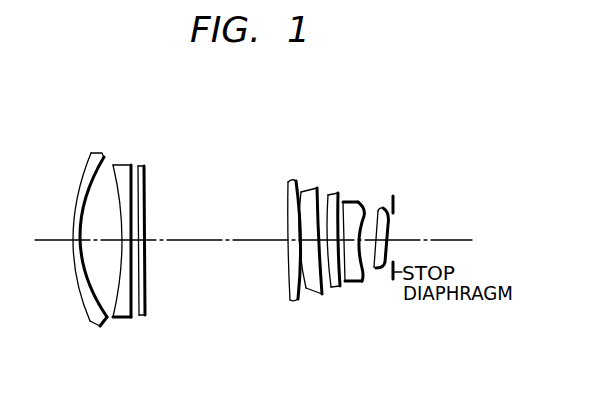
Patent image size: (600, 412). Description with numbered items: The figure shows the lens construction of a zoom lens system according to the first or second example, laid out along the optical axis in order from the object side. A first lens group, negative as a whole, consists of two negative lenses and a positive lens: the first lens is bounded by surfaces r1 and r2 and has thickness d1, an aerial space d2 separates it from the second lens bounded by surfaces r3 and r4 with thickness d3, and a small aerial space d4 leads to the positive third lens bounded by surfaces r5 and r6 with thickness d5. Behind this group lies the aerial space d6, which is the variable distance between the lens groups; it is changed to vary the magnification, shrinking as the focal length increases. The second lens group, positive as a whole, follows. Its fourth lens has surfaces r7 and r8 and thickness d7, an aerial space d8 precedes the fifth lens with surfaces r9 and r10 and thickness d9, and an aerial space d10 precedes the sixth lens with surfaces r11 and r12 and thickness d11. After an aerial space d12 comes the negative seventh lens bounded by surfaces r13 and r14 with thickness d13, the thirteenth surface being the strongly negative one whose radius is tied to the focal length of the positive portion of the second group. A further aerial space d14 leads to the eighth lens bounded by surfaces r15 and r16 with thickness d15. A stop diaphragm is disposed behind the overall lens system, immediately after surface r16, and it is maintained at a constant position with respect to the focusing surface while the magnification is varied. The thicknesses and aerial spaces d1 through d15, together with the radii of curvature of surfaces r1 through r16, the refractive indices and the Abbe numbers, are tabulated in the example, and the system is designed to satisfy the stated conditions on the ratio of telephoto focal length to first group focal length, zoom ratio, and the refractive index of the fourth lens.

The first lens surface r1 is at (85, 165).
The second lens surface r2 is at (103, 155).
The third lens surface r3 is at (120, 165).
The fourth lens surface r4 is at (131, 165).
The fifth lens surface r5 is at (139, 166).
The sixth lens surface r6 is at (146, 167).
The seventh lens surface r7 is at (288, 184).
The eighth lens surface r8 is at (296, 181).
The ninth lens surface r9 is at (303, 191).
The tenth lens surface r10 is at (318, 189).
The eleventh lens surface r11 is at (331, 196).
The twelfth lens surface r12 is at (343, 203).
The thirteenth lens surface r13 is at (364, 210).
The fourteenth lens surface r14 is at (383, 208).
The fifteenth lens surface r15 is at (393, 198).
The sixteenth lens surface r16 is at (390, 220).
The thickness of first lens d1 is at (73, 245).
The aerial space between first and second lenses d2 is at (93, 305).
The thickness of second lens d3 is at (115, 312).
The aerial space between second and third lenses d4 is at (143, 312).
The thickness of third lens d5 is at (138, 246).
The variable aerial space between lens groups d6 is at (208, 241).
The thickness of fourth lens d7 is at (284, 252).
The aerial space between fourth and fifth lenses d8 is at (291, 280).
The thickness of fifth lens d9 is at (303, 296).
The aerial space between fifth and sixth lenses d10 is at (323, 295).
The thickness of sixth lens d11 is at (341, 296).
The aerial space between sixth and seventh lenses d12 is at (347, 283).
The thickness of seventh lens d13 is at (364, 284).
The aerial space between seventh and eighth lenses d14 is at (380, 283).
The thickness of eighth lens d15 is at (388, 245).